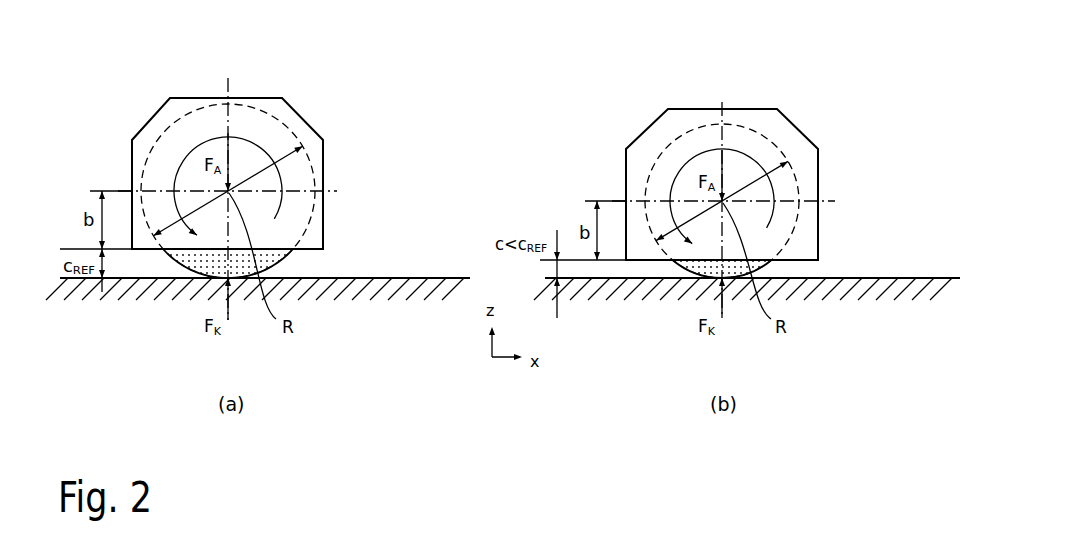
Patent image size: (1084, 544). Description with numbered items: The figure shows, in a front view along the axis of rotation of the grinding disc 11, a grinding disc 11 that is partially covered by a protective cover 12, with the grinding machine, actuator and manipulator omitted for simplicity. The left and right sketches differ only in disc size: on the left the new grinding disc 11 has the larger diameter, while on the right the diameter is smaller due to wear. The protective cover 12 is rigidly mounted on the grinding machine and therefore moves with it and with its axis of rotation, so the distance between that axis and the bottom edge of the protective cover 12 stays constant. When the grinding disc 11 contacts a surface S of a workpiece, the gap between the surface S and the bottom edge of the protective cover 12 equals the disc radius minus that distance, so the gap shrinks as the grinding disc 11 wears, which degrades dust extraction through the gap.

The grinding disc 11 is at (299, 127).
The protective cover 12 is at (173, 101).
The surface S is at (369, 276).